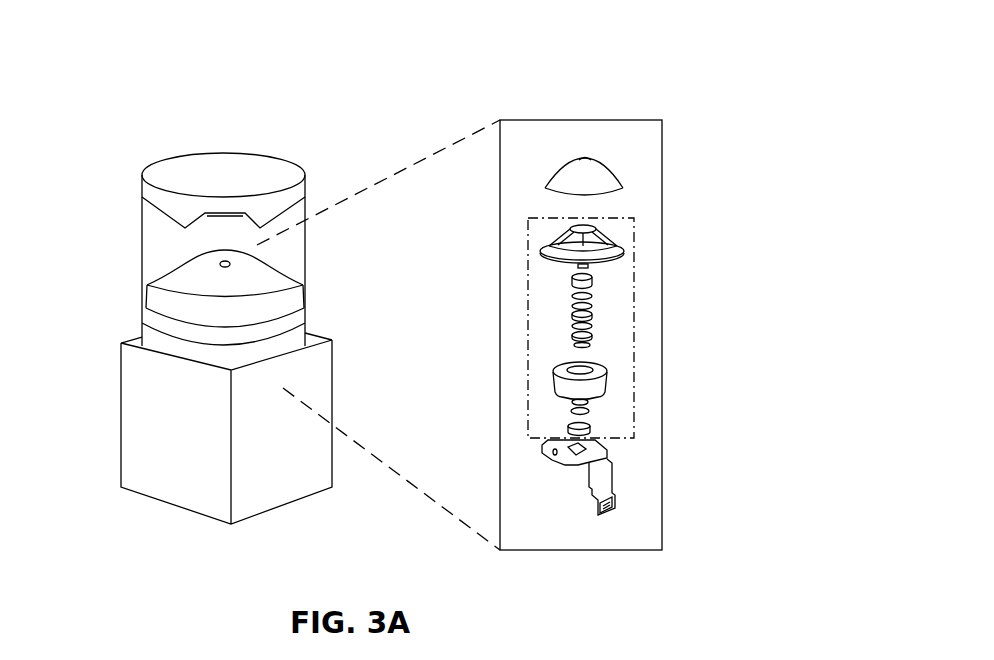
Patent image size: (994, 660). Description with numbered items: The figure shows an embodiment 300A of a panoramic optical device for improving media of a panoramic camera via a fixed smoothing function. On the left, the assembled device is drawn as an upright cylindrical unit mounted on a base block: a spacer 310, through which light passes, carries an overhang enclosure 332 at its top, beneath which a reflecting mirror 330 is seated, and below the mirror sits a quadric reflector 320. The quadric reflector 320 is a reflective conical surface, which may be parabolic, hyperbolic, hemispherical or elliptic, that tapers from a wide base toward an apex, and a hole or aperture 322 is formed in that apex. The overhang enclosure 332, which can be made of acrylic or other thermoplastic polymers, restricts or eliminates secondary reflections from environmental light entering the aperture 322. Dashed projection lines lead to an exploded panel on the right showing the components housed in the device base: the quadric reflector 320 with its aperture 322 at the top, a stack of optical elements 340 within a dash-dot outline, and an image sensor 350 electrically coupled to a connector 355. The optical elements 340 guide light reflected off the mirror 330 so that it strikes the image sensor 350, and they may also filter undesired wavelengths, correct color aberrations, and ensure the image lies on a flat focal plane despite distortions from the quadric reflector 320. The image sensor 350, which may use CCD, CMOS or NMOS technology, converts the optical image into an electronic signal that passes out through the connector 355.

The embodiment 300A is at (832, 41).
The spacer 310 is at (142, 236).
The overhang enclosure 332 is at (203, 157).
The reflecting mirror 330 is at (220, 212).
The quadric reflector 320 is at (263, 272).
The aperture 322 is at (585, 157).
The optical elements 340 is at (528, 277).
The image sensor 350 is at (577, 455).
The connector 355 is at (580, 501).